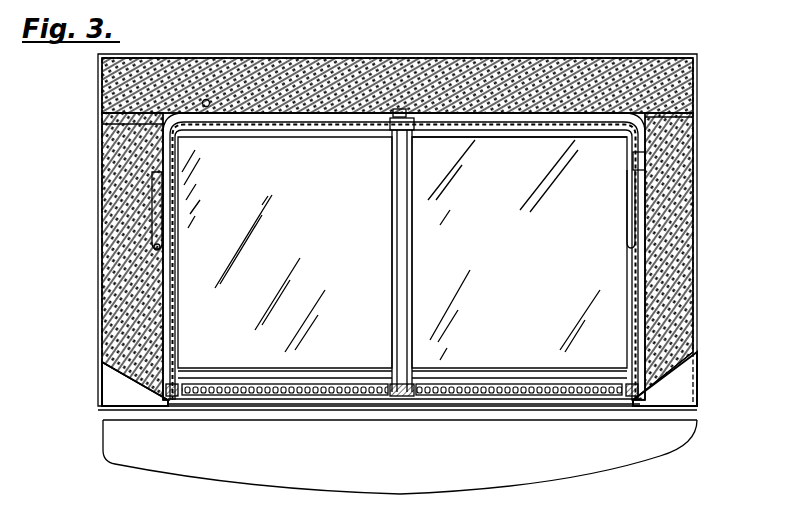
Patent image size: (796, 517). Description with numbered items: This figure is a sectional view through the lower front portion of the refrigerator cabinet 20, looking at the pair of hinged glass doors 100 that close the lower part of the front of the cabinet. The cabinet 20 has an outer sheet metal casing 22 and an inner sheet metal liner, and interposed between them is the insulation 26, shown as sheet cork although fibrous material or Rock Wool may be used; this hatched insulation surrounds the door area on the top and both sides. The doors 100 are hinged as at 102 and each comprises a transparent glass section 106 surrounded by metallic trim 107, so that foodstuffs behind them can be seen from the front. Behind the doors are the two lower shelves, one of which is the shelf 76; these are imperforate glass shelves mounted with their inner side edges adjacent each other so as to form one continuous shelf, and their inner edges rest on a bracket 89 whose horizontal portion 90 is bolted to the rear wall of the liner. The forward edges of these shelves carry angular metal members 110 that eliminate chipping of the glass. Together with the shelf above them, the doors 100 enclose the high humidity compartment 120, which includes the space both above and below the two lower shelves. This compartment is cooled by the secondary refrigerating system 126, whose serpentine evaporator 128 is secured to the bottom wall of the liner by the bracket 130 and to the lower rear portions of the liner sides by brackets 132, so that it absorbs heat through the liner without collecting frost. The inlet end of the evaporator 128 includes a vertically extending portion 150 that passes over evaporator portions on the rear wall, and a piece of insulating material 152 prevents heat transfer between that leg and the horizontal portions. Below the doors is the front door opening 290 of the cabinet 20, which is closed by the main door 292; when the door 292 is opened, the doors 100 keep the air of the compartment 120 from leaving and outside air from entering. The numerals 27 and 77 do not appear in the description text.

The cabinet 20 is at (697, 380).
The outer sheet metal casing 22 is at (697, 246).
The insulation 26 is at (670, 298).
The window frame 27 is at (632, 275).
The shelf 76 is at (600, 322).
The left glass pane 77 is at (190, 290).
The bracket 89 is at (412, 130).
The horizontal portion 90 is at (400, 265).
The doors 100 is at (316, 396).
The hinges 102 is at (178, 402).
The transparent glass sections 106 is at (356, 396).
The metallic trim 107 is at (400, 397).
The angular metal members 110 is at (240, 356).
The high humidity compartment 120 is at (605, 230).
The secondary refrigerating system 126 is at (570, 110).
The evaporator 128 is at (325, 113).
The bracket 130 is at (404, 110).
The brackets 132 is at (163, 176).
The vertically extending portion 150 is at (207, 100).
The insulating material 152 is at (218, 112).
The door opening 290 is at (237, 412).
The door 292 is at (292, 480).